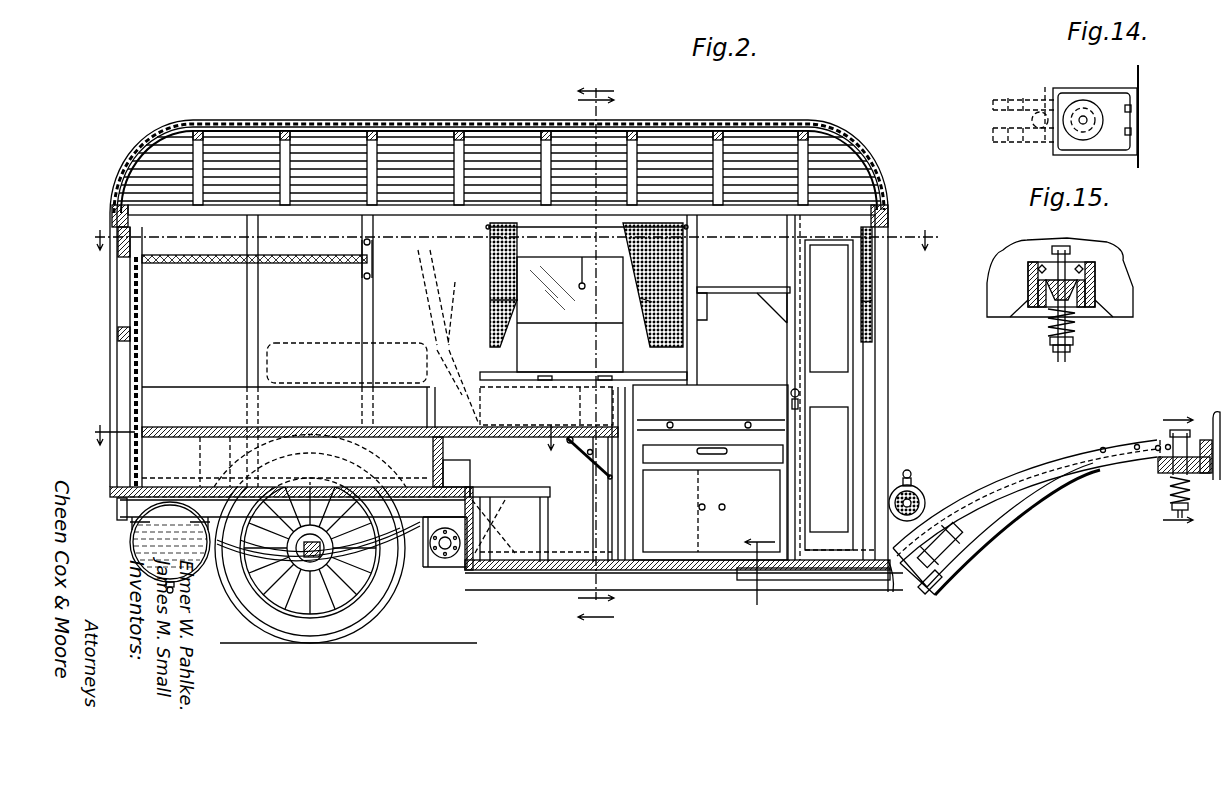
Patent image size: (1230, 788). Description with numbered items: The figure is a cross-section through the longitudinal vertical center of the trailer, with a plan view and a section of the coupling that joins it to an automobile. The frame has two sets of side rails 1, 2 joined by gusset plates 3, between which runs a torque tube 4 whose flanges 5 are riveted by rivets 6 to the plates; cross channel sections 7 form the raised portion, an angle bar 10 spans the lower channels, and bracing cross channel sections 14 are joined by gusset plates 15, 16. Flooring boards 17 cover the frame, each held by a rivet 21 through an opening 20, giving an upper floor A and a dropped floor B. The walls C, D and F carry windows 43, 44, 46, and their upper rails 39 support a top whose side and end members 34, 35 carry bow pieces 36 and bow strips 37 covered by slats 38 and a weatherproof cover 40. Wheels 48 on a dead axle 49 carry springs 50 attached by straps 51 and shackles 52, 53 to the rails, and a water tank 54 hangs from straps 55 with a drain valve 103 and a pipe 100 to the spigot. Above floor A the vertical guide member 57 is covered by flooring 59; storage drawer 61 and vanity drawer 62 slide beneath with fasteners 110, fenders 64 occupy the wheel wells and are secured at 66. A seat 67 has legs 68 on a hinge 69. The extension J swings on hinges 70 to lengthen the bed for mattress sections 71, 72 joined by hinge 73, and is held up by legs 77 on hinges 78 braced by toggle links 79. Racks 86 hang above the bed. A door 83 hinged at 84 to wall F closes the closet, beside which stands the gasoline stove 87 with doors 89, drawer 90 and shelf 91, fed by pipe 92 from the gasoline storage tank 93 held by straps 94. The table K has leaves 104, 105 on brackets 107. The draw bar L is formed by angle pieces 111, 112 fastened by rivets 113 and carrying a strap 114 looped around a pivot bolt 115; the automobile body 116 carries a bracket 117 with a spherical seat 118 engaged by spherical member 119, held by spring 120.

In FIG. 2, the side rails 1 is at (305, 487).
In FIG. 2, the side rails 2 is at (790, 591).
In FIG. 2, the gusset plates 3 is at (511, 236).
In FIG. 2, the torque tube 4 is at (596, 350).
In FIG. 2, the flanges 5 is at (450, 482).
In FIG. 2, the rivets 6 is at (495, 590).
In FIG. 2, the channel sections 7 is at (325, 437).
In FIG. 2, the angle bar 10 is at (505, 595).
In FIG. 2, the bracing cross channel sections 14 is at (960, 542).
In FIG. 2, the gusset plates 15 is at (943, 535).
In FIG. 2, the gusset plates 16 is at (897, 592).
In FIG. 2, the flooring boards 17 is at (193, 487).
In FIG. 2, the opening 20 is at (759, 569).
In FIG. 2, the rivet 21 is at (500, 570).
In FIG. 2, the side members 34 is at (447, 208).
In FIG. 2, the end members 35 is at (112, 212).
In FIG. 2, the bow pieces 36 is at (375, 131).
In FIG. 2, the bow strips 37 is at (203, 128).
In FIG. 2, the slats 38 is at (195, 124).
In FIG. 2, the upper rails 39 is at (343, 215).
In FIG. 2, the cover 40 is at (325, 100).
In FIG. 2, the window 43 is at (112, 284).
In FIG. 2, the window 44 is at (874, 300).
In FIG. 2, the window 46 is at (580, 289).
In FIG. 2, the wheels 48 is at (338, 632).
In FIG. 2, the dead axle 49 is at (272, 612).
In FIG. 2, the springs 50 is at (418, 582).
In FIG. 2, the straps 51 is at (240, 585).
In FIG. 2, the shackle 52 is at (447, 569).
In FIG. 2, the shackle 53 is at (208, 572).
In FIG. 2, the water tank 54 is at (128, 525).
In FIG. 2, the straps 55 is at (134, 546).
In FIG. 2, the vertical guide member 57 is at (332, 427).
In FIG. 2, the flooring 59 is at (182, 427).
In FIG. 2, the storage drawer 61 is at (395, 470).
In FIG. 2, the vanity drawer 62 is at (445, 450).
In FIG. 2, the fenders 64 is at (230, 470).
In FIG. 2, the fender attachment 66 is at (470, 595).
In FIG. 2, the seat 67 is at (505, 488).
In FIG. 2, the legs 68 is at (545, 531).
In FIG. 2, the hinge 69 is at (535, 500).
In FIG. 2, the hinges 70 is at (440, 428).
In FIG. 2, the mattress section 71 is at (165, 387).
In FIG. 2, the mattress section 72 is at (345, 344).
In FIG. 2, the hinge 73 is at (427, 403).
In FIG. 2, the legs 77 is at (450, 292).
In FIG. 2, the hinges 78 is at (430, 262).
In FIG. 2, the toggle links 79 is at (592, 463).
In FIG. 2, the door 83 is at (831, 387).
In FIG. 2, the hinge 84 is at (851, 532).
In FIG. 2, the racks 86 is at (313, 264).
In FIG. 2, the gasoline stove 87 is at (727, 385).
In FIG. 2, the doors 89 is at (733, 478).
In FIG. 2, the drawer 90 is at (713, 452).
In FIG. 2, the shelf 91 is at (746, 294).
In FIG. 2, the pipe 92 is at (113, 406).
In FIG. 2, the gasoline storage tank 93 is at (915, 492).
In FIG. 2, the straps 94 is at (940, 527).
In FIG. 2, the pipe 100 is at (612, 380).
In FIG. 2, the drain valve 103 is at (168, 588).
In FIG. 2, the table leaf 104 is at (632, 575).
In FIG. 2, the table leaf 105 is at (637, 540).
In FIG. 2, the brackets 107 is at (546, 376).
In FIG. 2, the fastener 110 is at (365, 480).
In FIG. 2, the angle piece 111 is at (1000, 508).
In FIG. 2, the angle piece 112 is at (1010, 468).
In FIG. 14, the angle piece 112 is at (995, 130).
In FIG. 2, the rivets 113 is at (1103, 447).
In FIG. 14, the rivets 113 is at (1010, 98).
In FIG. 2, the strap 114 is at (1160, 440).
In FIG. 14, the strap 114 is at (1045, 88).
In FIG. 2, the pivot bolt 115 is at (1185, 433).
In FIG. 14, the pivot bolt 115 is at (1084, 118).
In FIG. 15, the pivot bolt 115 is at (1058, 358).
In FIG. 2, the automobile body 116 is at (1216, 472).
In FIG. 14, the automobile body 116 is at (1140, 82).
In FIG. 15, the automobile body 116 is at (1130, 282).
In FIG. 2, the bracket 117 is at (1205, 470).
In FIG. 14, the bracket 117 is at (1132, 110).
In FIG. 15, the bracket 117 is at (1097, 268).
In FIG. 2, the spherical seat 118 is at (1160, 466).
In FIG. 14, the spherical seat 118 is at (1095, 118).
In FIG. 15, the spherical seat 118 is at (1095, 308).
In FIG. 2, the spherical member 119 is at (1172, 488).
In FIG. 15, the spherical member 119 is at (1046, 312).
In FIG. 2, the spring 120 is at (1172, 506).
In FIG. 15, the spring 120 is at (1050, 340).
In FIG. 2, the upper floor section A is at (270, 480).
In FIG. 2, the lower floor section B is at (690, 590).
In FIG. 2, the side wall C is at (310, 351).
In FIG. 2, the end wall D is at (113, 306).
In FIG. 2, the front wall F is at (889, 388).
In FIG. 2, the extension J is at (430, 310).
In FIG. 2, the table K is at (637, 520).
In FIG. 2, the draw bar L is at (1038, 499).